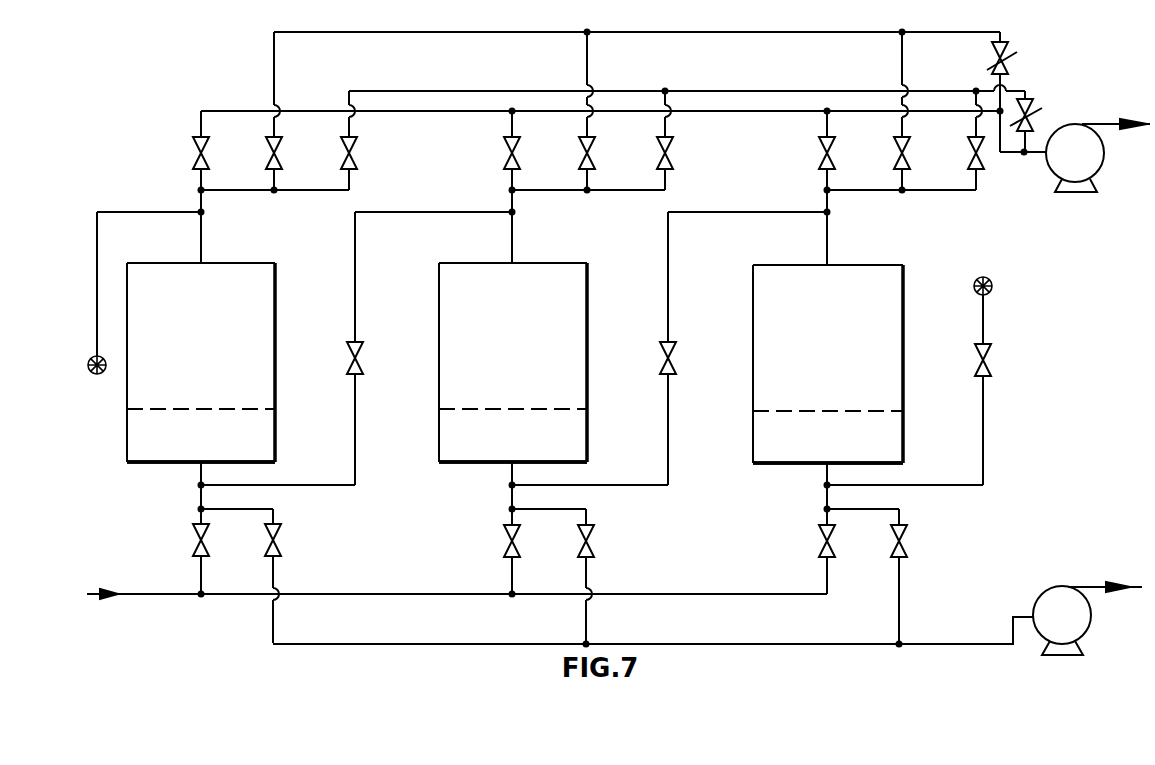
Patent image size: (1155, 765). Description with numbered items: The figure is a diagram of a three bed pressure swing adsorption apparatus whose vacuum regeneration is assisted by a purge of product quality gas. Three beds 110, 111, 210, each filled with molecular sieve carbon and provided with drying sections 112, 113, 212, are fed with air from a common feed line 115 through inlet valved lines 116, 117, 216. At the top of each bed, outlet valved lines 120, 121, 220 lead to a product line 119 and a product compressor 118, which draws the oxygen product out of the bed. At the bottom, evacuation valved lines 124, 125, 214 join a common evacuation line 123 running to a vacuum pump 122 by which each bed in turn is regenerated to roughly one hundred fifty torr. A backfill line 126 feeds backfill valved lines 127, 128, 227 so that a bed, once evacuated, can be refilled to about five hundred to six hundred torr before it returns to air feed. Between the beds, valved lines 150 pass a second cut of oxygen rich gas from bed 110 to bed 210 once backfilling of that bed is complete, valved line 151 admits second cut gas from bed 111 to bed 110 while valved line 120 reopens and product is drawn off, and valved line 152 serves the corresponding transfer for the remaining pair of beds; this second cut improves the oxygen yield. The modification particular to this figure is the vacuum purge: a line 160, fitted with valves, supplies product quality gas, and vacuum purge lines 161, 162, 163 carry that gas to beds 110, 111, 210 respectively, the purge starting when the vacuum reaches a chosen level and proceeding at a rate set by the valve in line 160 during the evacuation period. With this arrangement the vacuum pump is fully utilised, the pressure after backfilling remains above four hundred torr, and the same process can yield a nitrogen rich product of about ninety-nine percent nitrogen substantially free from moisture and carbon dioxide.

The bed 110 is at (185, 360).
The drying section 112 is at (185, 446).
The bed 111 is at (495, 360).
The drying section 113 is at (495, 446).
The bed 210 is at (813, 360).
The drying section 212 is at (813, 446).
The air feed line 115 is at (160, 598).
The valved line 116 is at (197, 517).
The valved line 117 is at (506, 517).
The valved line 216 is at (823, 517).
The valved line 124 is at (283, 517).
The valved line 125 is at (595, 517).
The valved line 214 is at (906, 517).
The evacuation line 123 is at (951, 641).
The vacuum pump 122 is at (1049, 628).
The product compressor 118 is at (1062, 166).
The product line 119 is at (1036, 158).
The valved line 120 is at (200, 123).
The valved line 121 is at (511, 178).
The valved line 220 is at (826, 178).
The backfill line 126 is at (335, 36).
The valved line 127 is at (241, 192).
The valved line 128 is at (558, 192).
The valved line 227 is at (875, 192).
The vacuum purge line 161 is at (470, 90).
The vacuum purge line 162 is at (667, 128).
The vacuum purge line 163 is at (974, 134).
The line 160 is at (1018, 93).
The valved lines 150 is at (98, 234).
The valved line 151 is at (357, 432).
The valved line 152 is at (670, 432).